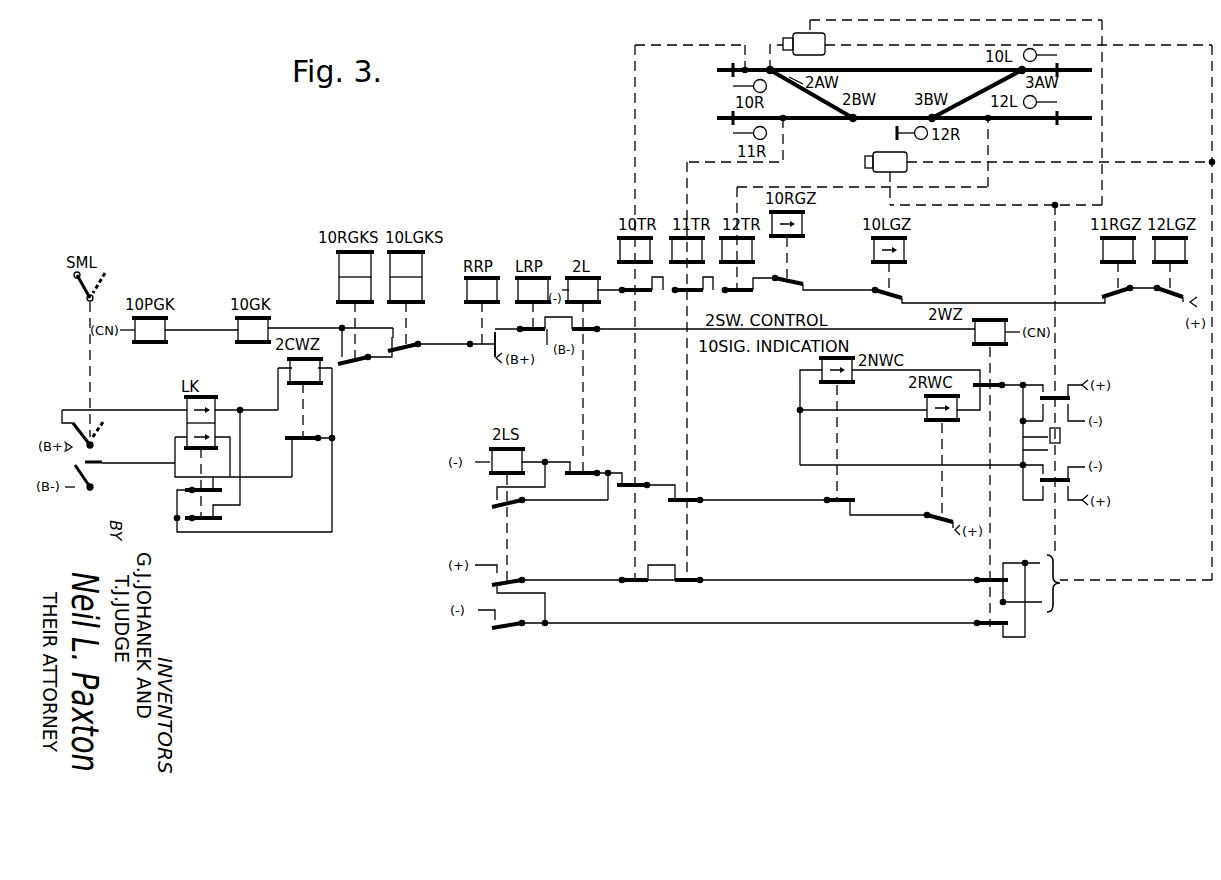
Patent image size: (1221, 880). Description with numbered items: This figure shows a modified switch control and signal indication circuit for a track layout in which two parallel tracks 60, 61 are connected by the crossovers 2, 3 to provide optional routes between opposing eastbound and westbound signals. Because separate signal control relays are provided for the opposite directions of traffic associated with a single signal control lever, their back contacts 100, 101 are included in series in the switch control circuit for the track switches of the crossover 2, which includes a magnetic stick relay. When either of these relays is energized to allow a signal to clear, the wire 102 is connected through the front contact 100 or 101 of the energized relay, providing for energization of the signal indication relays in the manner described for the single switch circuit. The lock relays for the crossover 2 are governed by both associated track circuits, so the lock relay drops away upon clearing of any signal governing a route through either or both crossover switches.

The crossover 2 is at (815, 98).
The crossover 3 is at (972, 97).
The track 60 is at (848, 70).
The track 61 is at (826, 120).
The contact of relay 10RGKS 100 is at (358, 368).
The contact of relay 10LGKS 101 is at (412, 356).
The wire 102 is at (432, 342).